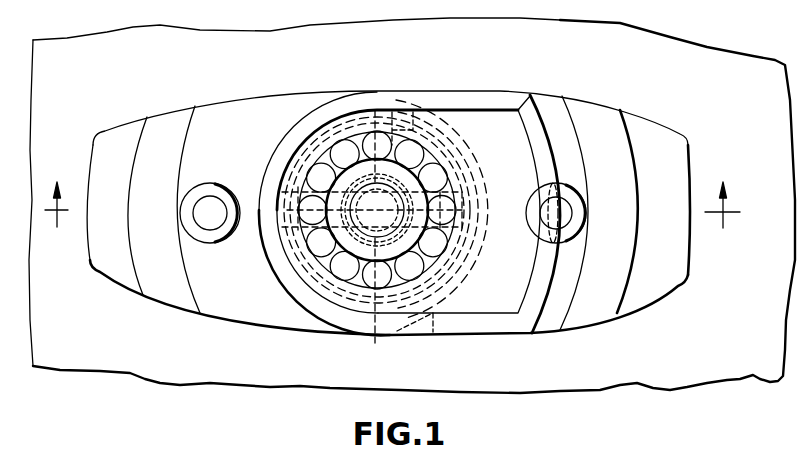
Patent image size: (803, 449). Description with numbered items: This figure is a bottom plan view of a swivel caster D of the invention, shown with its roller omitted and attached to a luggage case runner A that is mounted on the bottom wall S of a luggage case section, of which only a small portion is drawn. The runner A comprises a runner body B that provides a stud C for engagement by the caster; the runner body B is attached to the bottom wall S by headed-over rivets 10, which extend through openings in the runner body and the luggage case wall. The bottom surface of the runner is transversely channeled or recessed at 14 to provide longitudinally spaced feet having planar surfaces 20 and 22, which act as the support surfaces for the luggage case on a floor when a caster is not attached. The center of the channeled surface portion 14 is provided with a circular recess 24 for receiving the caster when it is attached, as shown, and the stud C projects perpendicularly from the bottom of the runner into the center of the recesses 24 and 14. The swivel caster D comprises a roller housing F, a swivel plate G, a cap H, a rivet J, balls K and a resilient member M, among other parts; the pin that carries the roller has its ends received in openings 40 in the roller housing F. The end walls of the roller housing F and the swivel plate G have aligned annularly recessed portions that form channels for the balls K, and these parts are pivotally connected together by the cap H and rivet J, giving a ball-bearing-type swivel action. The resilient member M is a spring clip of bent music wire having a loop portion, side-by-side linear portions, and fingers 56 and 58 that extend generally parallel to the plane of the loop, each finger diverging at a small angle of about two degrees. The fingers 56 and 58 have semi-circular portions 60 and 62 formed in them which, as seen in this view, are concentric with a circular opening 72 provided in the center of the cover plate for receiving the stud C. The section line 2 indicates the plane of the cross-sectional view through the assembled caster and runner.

The section line 2- 2 is at (392, 222).
The headed-over rivets 10 is at (206, 208).
The transversely channeled surface portion 14 is at (212, 305).
The planar support surface 20 is at (172, 161).
The planar support surface 22 is at (592, 159).
The circular recess 24 is at (290, 295).
The openings in roller housing 40 is at (490, 100).
The finger of spring clip 56 is at (473, 235).
The finger of spring clip 58 is at (473, 167).
The semi-circular portion 60 is at (397, 240).
The semi-circular portion 62 is at (408, 108).
The circular opening in cover plate 72 is at (326, 250).
The luggage case runner A is at (244, 90).
The runner body B is at (210, 272).
The stud C is at (278, 155).
The swivel caster D is at (473, 80).
The roller housing F is at (522, 104).
The swivel plate G is at (470, 136).
The cap H is at (420, 157).
The rivet J is at (352, 170).
The balls K is at (407, 178).
The resilient member M is at (282, 266).
The bottom wall of luggage case section S is at (687, 372).